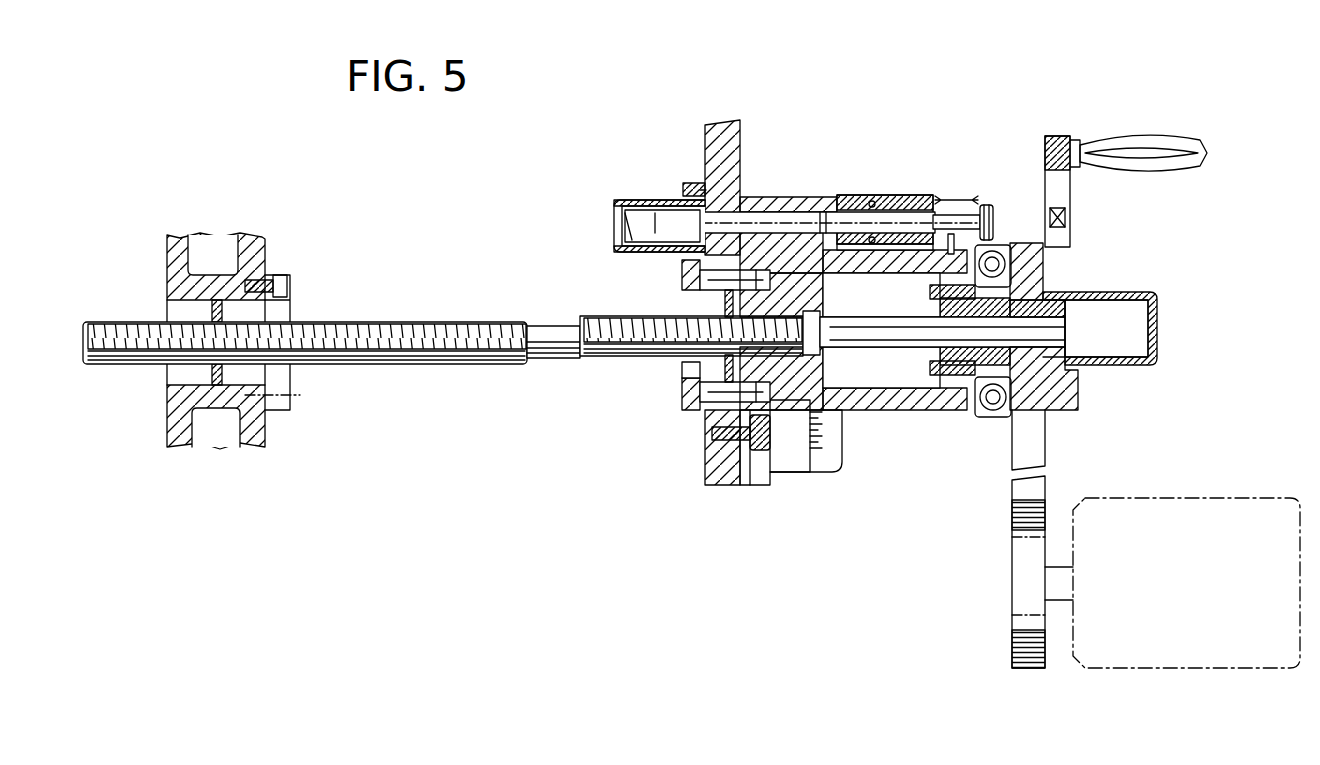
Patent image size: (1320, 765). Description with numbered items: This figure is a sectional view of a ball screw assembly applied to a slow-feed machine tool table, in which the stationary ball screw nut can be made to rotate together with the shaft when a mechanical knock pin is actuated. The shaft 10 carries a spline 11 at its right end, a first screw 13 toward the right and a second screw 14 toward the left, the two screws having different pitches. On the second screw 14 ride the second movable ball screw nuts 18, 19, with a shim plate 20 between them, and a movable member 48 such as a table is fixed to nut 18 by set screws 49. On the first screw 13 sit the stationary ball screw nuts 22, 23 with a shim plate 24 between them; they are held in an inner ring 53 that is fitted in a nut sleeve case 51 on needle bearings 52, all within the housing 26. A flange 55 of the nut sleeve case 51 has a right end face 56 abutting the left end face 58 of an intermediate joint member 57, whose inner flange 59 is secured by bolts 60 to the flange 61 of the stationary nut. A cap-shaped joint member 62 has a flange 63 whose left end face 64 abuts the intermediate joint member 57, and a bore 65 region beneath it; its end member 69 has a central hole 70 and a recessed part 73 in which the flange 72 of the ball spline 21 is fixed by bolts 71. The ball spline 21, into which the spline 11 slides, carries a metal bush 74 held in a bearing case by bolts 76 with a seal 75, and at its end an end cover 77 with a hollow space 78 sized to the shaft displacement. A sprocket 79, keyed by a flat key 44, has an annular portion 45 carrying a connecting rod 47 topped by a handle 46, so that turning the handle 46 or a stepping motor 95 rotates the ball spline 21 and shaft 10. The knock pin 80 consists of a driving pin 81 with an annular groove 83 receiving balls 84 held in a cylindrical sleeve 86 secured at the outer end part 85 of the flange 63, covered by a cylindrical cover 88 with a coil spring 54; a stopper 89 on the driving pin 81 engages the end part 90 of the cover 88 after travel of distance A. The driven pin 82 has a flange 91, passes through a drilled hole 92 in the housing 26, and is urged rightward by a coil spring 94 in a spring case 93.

The shaft 10 is at (554, 358).
The spline 11 is at (968, 333).
The first screw 13 is at (596, 316).
The second screw 14 is at (385, 364).
The second movable ball screw nut 18 is at (168, 376).
The second movable ball screw nut 19 is at (292, 381).
The shim plate 20 is at (216, 417).
The ball spline 21 is at (1080, 357).
The stationary ball screw nut 22 is at (660, 360).
The ball screw nut 23 is at (818, 368).
The shim plate 24 is at (706, 368).
The housing 26 is at (722, 482).
The flat key 44 is at (1076, 326).
The annular portion 45 is at (1080, 398).
The handle 46 is at (1143, 142).
The connecting rod 47 is at (1072, 190).
The movable member 48 is at (186, 243).
The set screws 49 is at (283, 274).
The nut sleeve case 51 is at (706, 406).
The needle bearings 52 is at (802, 375).
The inner ring 53 is at (704, 290).
The coil spring 54 is at (858, 198).
The flange 55 is at (778, 203).
The right end face 56 is at (770, 440).
The intermediate joint member 57 is at (802, 198).
The left end face 58 is at (786, 203).
The inner flange 59 is at (796, 286).
The bolts 60 is at (814, 264).
The flange 61 is at (788, 408).
The joint member 62 is at (870, 410).
The flange 63 is at (842, 198).
The left end face 64 is at (830, 198).
The bore 65 is at (806, 208).
The end member 69 is at (945, 366).
The central hole 70 is at (935, 302).
The bolts 71 is at (930, 373).
The flange 72 is at (966, 402).
The recessed part 73 is at (910, 398).
The metal bush 74 is at (1042, 539).
The seal 75 is at (990, 416).
The bolts 76 is at (690, 184).
The end cover 77 is at (1147, 290).
The hollow space 78 is at (1150, 320).
The sprocket 79 is at (1030, 243).
The knock pin 80 is at (966, 167).
The driving pin 81 is at (944, 241).
The driven pin 82 is at (657, 250).
The annular groove 83 is at (918, 196).
The balls 84 is at (895, 196).
The outer end part 85 is at (866, 198).
The cylindrical sleeve 86 is at (905, 194).
The cylindrical cover 88 is at (880, 196).
The stopper 89 is at (995, 208).
The end part 90 is at (928, 196).
The flange 91 is at (643, 225).
The drilled hole 92 is at (740, 213).
The spring case 93 is at (656, 210).
The coil spring 94 is at (624, 206).
The stepping motor 95 is at (1163, 503).
The dimension A is at (949, 187).